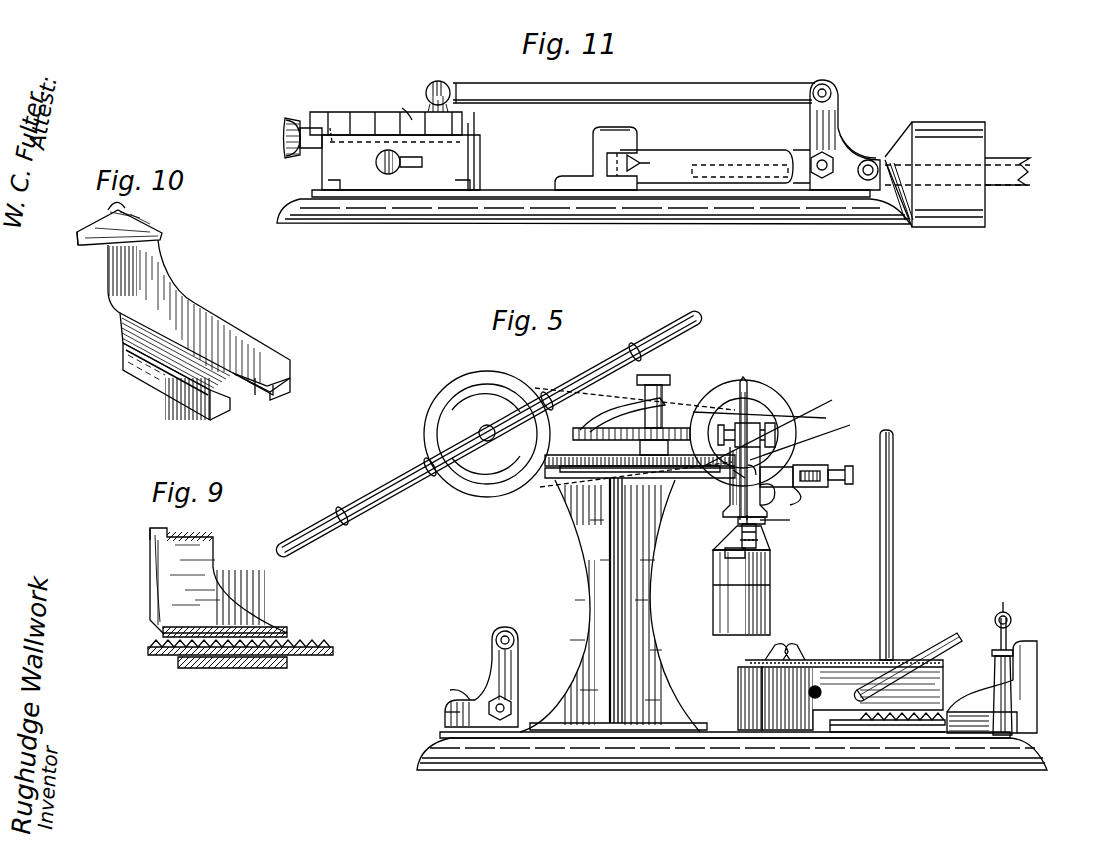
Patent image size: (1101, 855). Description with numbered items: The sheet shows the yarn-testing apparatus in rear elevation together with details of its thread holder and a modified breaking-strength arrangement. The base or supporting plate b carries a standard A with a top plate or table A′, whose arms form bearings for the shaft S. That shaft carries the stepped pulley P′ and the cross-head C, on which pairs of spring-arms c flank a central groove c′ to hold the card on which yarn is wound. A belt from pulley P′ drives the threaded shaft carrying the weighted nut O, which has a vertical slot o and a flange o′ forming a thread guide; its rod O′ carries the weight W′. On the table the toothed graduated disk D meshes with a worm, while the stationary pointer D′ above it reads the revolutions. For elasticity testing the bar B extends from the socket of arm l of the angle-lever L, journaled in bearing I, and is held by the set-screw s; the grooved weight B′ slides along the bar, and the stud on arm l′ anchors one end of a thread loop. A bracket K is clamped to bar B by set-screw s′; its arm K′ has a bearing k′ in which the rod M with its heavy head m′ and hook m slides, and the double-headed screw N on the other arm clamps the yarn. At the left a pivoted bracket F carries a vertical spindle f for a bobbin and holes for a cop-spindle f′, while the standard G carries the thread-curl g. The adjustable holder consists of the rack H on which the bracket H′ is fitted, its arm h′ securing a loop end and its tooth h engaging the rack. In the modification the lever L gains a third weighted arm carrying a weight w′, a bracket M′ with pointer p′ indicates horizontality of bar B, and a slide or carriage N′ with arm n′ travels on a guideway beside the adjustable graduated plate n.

In FIG. 11, the laterally-projecting arm n′ is at (440, 70).
In FIG. 11, the slide or carriage N′ is at (372, 92).
In FIG. 5, the slide or carriage N′ is at (767, 410).
In FIG. 11, the graduated plate n is at (466, 183).
In FIG. 11, the bracket M′ is at (580, 146).
In FIG. 11, the pointer p′ is at (636, 160).
In FIG. 11, the weight w′ is at (706, 154).
In FIG. 11, the arm of lever L l′ is at (836, 135).
In FIG. 5, the arm of lever L l′ is at (488, 677).
In FIG. 11, the arm of lever L l is at (830, 165).
In FIG. 5, the arm of lever L l is at (445, 715).
In FIG. 11, the angle-lever L is at (858, 138).
In FIG. 5, the angle-lever L is at (460, 681).
In FIG. 11, the set-screw s is at (870, 160).
In FIG. 11, the grooved weight B′ is at (920, 118).
In FIG. 11, the bar B is at (1022, 158).
In FIG. 5, the bar B is at (810, 499).
In FIG. 11, the bearing I is at (818, 178).
In FIG. 5, the bearing I is at (512, 708).
In FIG. 10, the arm h′ is at (76, 246).
In FIG. 9, the arm h′ is at (150, 540).
In FIG. 10, the bracket H′ is at (172, 280).
In FIG. 9, the bracket H′ is at (218, 580).
In FIG. 5, the bracket H′ is at (1006, 687).
In FIG. 10, the tooth h is at (248, 386).
In FIG. 9, the tooth h is at (280, 632).
In FIG. 9, the rack or toothed plate H is at (226, 650).
In FIG. 5, the rack or toothed plate H is at (885, 723).
In FIG. 5, the base or supporting plate b is at (732, 762).
In FIG. 5, the standard A is at (613, 605).
In FIG. 5, the top plate or table A′ is at (560, 480).
In FIG. 5, the graduated disk D is at (631, 424).
In FIG. 5, the pointer D′ is at (622, 415).
In FIG. 5, the stepped cord or belt pulley P′ is at (487, 429).
In FIG. 5, the shaft S is at (492, 440).
In FIG. 5, the cross-head C is at (575, 358).
In FIG. 5, the spring-arms c is at (340, 506).
In FIG. 5, the central groove c′ is at (400, 482).
In FIG. 5, the double-headed screw N is at (736, 435).
In FIG. 5, the flange o′ is at (748, 420).
In FIG. 5, the bracket K is at (812, 464).
In FIG. 5, the set-screw s′ is at (848, 473).
In FIG. 5, the arm of bracket K K′ is at (775, 500).
In FIG. 5, the hook m is at (761, 475).
In FIG. 5, the weighted nut O is at (727, 478).
In FIG. 5, the vertical slot o is at (740, 470).
In FIG. 5, the heavy head m′ is at (738, 520).
In FIG. 5, the rod O′ is at (742, 530).
In FIG. 5, the rod M is at (756, 530).
In FIG. 5, the bearing k′ is at (792, 521).
In FIG. 5, the weight W′ is at (770, 600).
In FIG. 5, the vertical spindle f is at (893, 548).
In FIG. 5, the bracket F is at (840, 680).
In FIG. 5, the cop-spindle f′ is at (908, 662).
In FIG. 5, the thread-curl g is at (1010, 614).
In FIG. 5, the standard G is at (1000, 723).